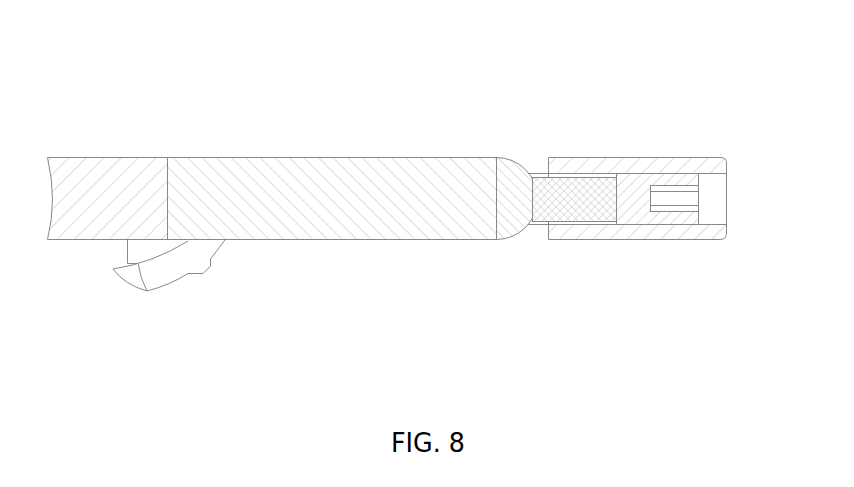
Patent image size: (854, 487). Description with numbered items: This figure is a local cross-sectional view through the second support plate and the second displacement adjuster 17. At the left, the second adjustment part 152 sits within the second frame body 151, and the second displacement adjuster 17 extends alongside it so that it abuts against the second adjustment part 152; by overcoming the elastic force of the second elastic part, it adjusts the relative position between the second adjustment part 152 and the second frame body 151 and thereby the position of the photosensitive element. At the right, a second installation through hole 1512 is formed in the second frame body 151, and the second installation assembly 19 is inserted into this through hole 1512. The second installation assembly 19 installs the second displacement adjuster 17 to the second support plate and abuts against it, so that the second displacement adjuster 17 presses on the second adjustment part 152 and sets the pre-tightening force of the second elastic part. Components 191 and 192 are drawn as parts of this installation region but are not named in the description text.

The second adjustment part 152 is at (113, 187).
The second displacement adjuster 17 is at (385, 182).
The second frame body 151 is at (587, 167).
The second installation through hole 1512 is at (730, 194).
The elastic member 192 is at (563, 202).
The mounting block 191 is at (643, 212).
The second installation assembly 19 is at (666, 224).